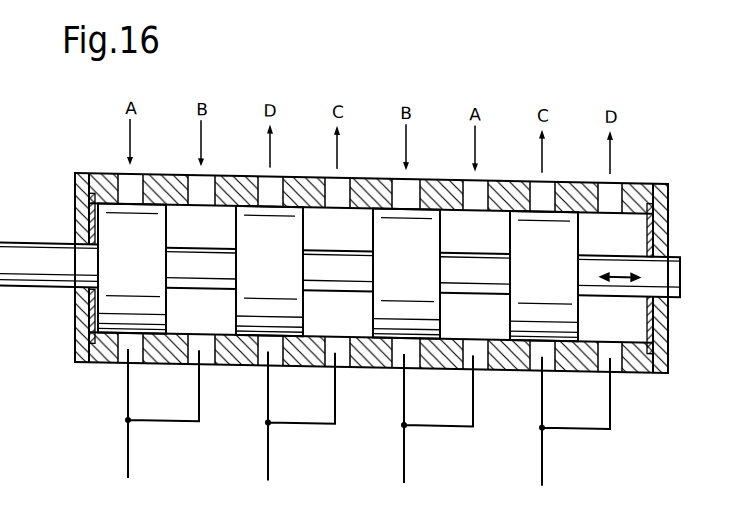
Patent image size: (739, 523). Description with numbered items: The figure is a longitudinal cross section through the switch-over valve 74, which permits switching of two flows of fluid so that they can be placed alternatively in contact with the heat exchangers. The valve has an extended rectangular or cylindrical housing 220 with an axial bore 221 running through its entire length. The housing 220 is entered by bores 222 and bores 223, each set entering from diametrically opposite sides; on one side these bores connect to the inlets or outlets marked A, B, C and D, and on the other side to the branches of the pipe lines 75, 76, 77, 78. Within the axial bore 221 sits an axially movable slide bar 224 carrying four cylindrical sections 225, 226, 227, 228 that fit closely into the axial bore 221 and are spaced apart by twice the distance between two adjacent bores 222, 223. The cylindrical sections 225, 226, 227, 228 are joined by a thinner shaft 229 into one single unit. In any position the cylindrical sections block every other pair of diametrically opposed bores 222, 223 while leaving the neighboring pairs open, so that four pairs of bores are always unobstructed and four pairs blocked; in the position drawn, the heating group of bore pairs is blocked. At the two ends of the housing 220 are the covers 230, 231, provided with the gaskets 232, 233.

The switch-over valve 74 is at (106, 168).
The pipe line 75 is at (127, 455).
The pipe line 76 is at (267, 455).
The pipe line 77 is at (403, 455).
The pipe line 78 is at (541, 455).
The housing 220 is at (652, 173).
The axial bore 221 is at (585, 204).
The bore 222 is at (139, 185).
The bore 223 is at (121, 355).
The slide bar 224 is at (678, 272).
The cylindrical section 225 is at (149, 279).
The cylindrical section 226 is at (285, 281).
The cylindrical section 227 is at (422, 281).
The cylindrical section 228 is at (559, 280).
The shaft 229 is at (197, 278).
The cover 230 is at (94, 226).
The cover 231 is at (668, 197).
The gasket 232 is at (96, 221).
The gasket 233 is at (647, 312).